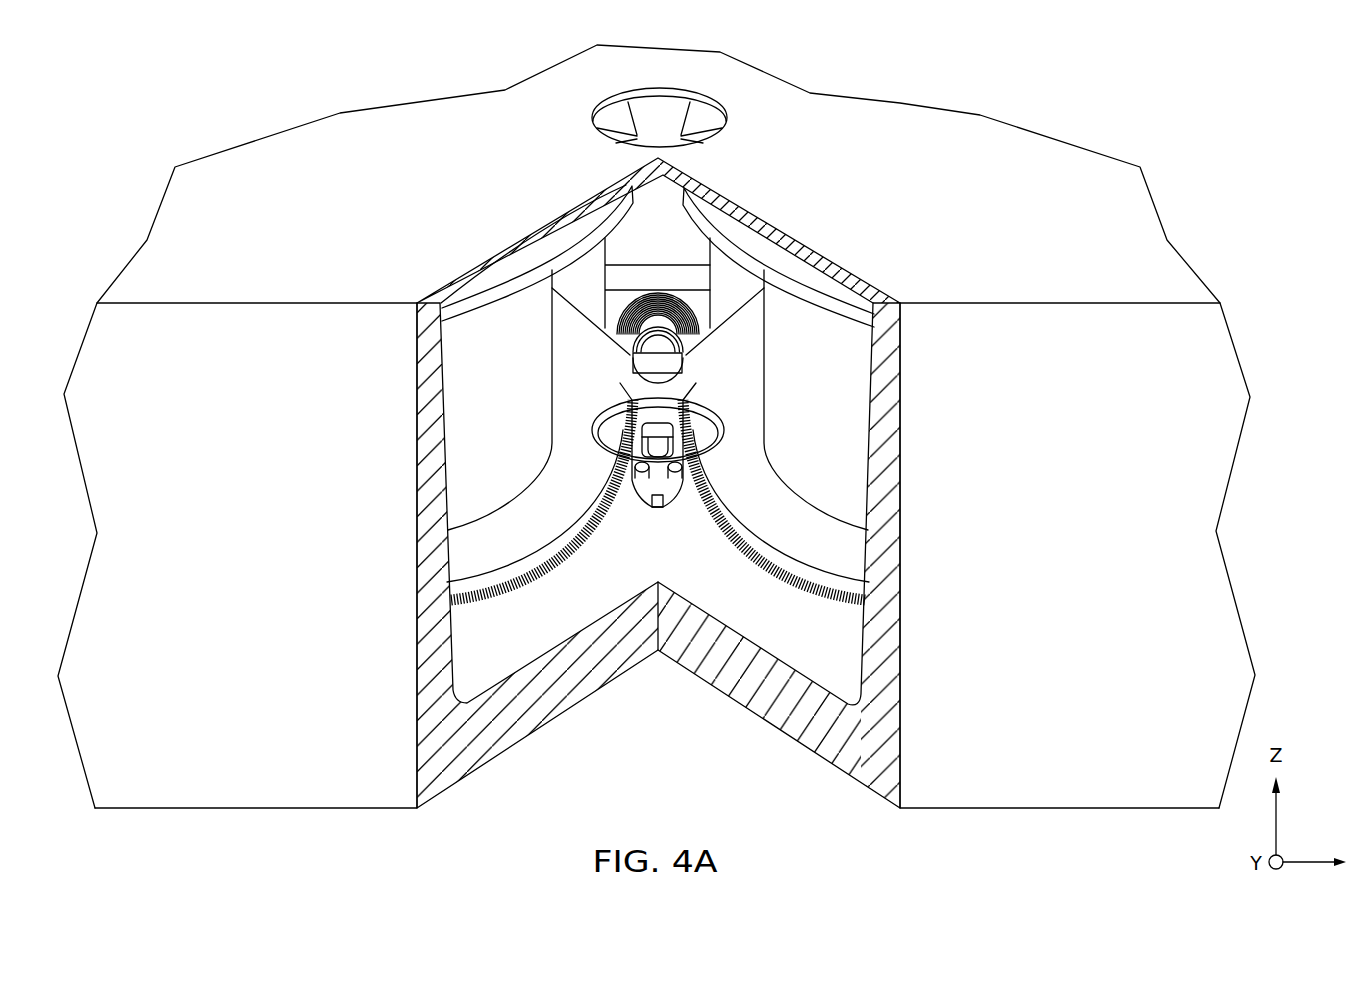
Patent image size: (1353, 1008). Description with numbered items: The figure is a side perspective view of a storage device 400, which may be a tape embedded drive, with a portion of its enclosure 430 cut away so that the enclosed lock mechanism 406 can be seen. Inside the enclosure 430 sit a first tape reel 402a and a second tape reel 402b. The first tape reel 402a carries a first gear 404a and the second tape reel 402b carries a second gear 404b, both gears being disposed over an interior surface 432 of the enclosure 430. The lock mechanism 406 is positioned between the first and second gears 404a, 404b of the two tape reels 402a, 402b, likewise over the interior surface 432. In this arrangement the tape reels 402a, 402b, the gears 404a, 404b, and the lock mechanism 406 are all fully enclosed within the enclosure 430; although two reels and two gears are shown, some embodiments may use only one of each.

The storage device 400 is at (255, 93).
The first tape reel 402a is at (507, 530).
The second tape reel 402b is at (760, 530).
The first gear 404a is at (527, 588).
The second gear 404b is at (779, 575).
The lock mechanism 406 is at (657, 520).
The enclosure 430 is at (230, 662).
The interior surface 432 is at (847, 657).